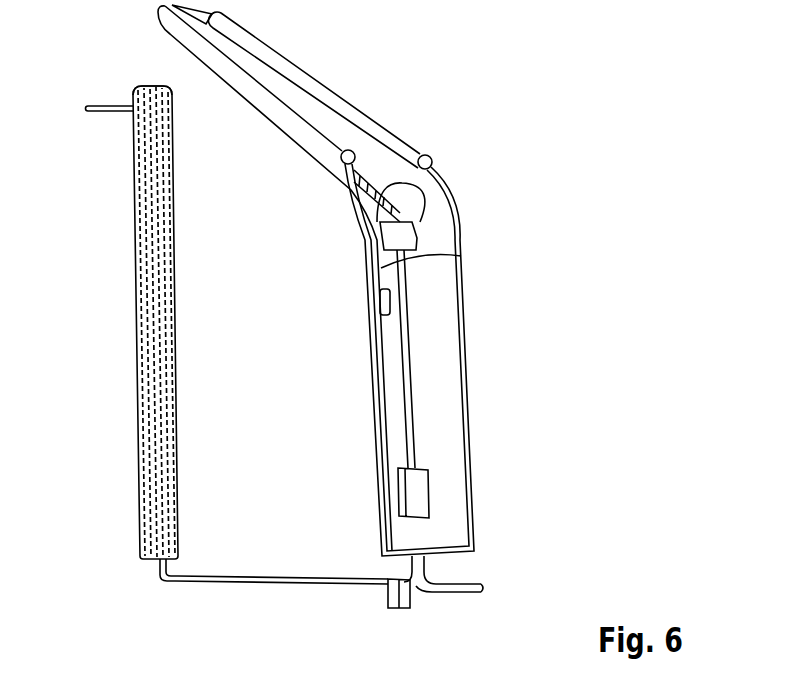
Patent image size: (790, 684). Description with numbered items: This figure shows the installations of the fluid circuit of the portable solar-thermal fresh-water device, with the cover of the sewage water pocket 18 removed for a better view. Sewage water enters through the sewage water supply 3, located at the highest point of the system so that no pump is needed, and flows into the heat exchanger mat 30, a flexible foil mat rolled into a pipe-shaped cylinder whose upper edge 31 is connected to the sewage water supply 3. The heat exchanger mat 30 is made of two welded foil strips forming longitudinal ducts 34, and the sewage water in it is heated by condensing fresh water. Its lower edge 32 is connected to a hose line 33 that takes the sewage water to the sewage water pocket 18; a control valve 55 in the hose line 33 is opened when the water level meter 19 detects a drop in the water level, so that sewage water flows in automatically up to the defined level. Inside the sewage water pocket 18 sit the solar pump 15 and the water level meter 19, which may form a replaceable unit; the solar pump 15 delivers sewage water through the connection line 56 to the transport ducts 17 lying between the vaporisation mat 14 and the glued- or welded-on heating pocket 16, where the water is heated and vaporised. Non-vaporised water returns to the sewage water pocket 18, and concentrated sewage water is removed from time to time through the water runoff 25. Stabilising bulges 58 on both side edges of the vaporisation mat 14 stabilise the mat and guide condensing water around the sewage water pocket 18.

The sewage water supply 3 is at (90, 106).
The vaporisation mat 14 is at (402, 166).
The solar pump 15 is at (415, 505).
The heating pocket 16 is at (376, 190).
The transport ducts 17 is at (425, 186).
The sewage water pocket 18 is at (474, 403).
The water level meter 19 is at (380, 292).
The water runoff 25 is at (468, 582).
The heat exchanger mat 30 is at (177, 378).
The upper edge 31 is at (168, 95).
The lower edge 32 is at (175, 557).
The hose line 33 is at (295, 576).
The ducts 34 is at (163, 239).
The control valve 55 is at (390, 600).
The connection line 56 is at (408, 367).
The stabilising bulges 58 is at (197, 32).